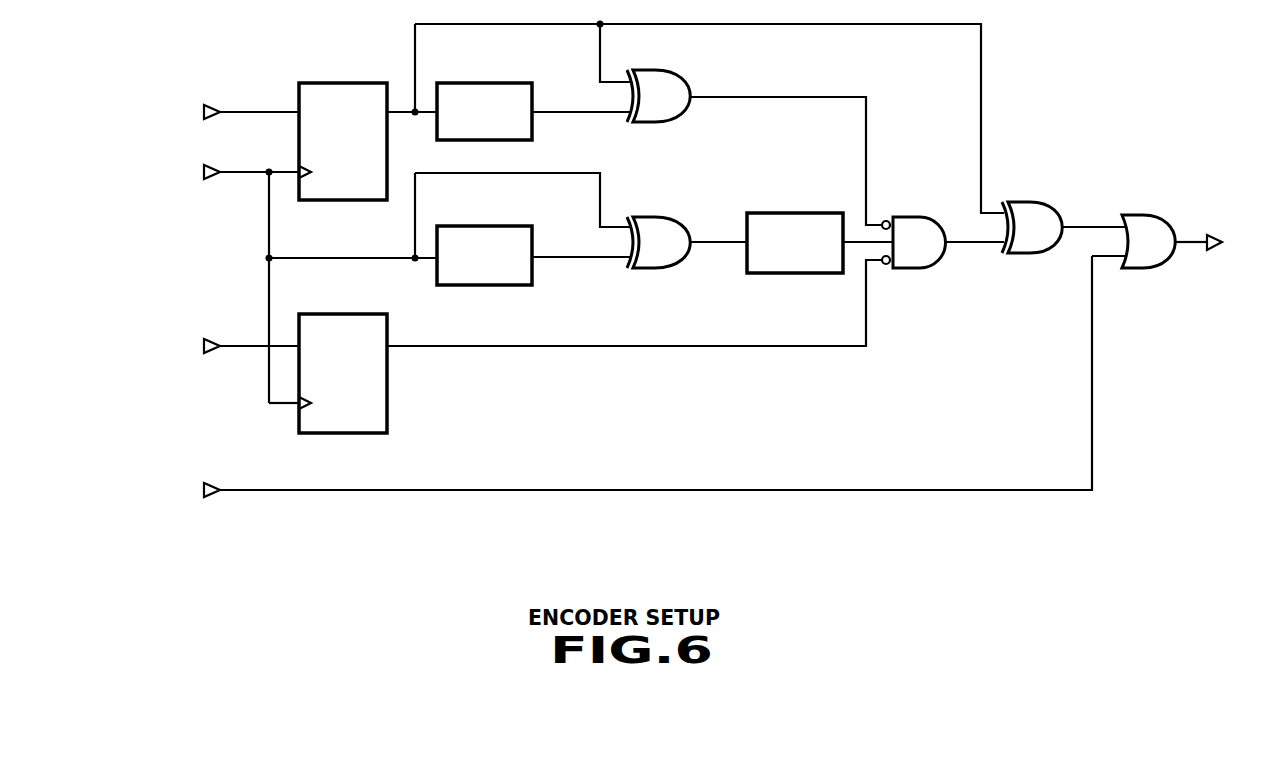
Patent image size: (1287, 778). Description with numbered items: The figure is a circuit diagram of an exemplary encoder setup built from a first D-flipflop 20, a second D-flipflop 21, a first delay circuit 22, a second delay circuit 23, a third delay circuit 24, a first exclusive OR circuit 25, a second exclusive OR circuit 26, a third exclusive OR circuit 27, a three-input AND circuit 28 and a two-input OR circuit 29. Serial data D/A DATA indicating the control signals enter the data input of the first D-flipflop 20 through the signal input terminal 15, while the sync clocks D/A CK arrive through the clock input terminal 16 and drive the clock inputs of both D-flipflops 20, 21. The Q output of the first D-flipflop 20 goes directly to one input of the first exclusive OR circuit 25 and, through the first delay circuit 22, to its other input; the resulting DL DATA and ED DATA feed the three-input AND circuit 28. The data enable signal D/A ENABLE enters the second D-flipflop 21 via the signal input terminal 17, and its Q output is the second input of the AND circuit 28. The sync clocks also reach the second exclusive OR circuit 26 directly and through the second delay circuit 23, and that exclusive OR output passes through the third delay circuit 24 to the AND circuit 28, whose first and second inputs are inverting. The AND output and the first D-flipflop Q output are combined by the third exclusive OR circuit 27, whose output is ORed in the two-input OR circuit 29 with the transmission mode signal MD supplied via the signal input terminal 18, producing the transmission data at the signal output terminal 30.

The signal input terminal 15 is at (209, 105).
The clock input terminal 16 is at (209, 180).
The signal input terminal 17 is at (210, 338).
The signal input terminal 18 is at (212, 483).
The first D-flipflop 20 is at (340, 83).
The second D-flipflop 21 is at (336, 314).
The first delay circuit 22 is at (482, 83).
The second delay circuit 23 is at (486, 226).
The third delay circuit 24 is at (786, 213).
The first exclusive OR circuit 25 is at (681, 76).
The second exclusive OR circuit 26 is at (668, 217).
The third exclusive OR circuit 27 is at (1030, 202).
The three-input AND circuit 28 is at (908, 217).
The two-input OR circuit 29 is at (1140, 215).
The signal output terminal 30 is at (1222, 249).